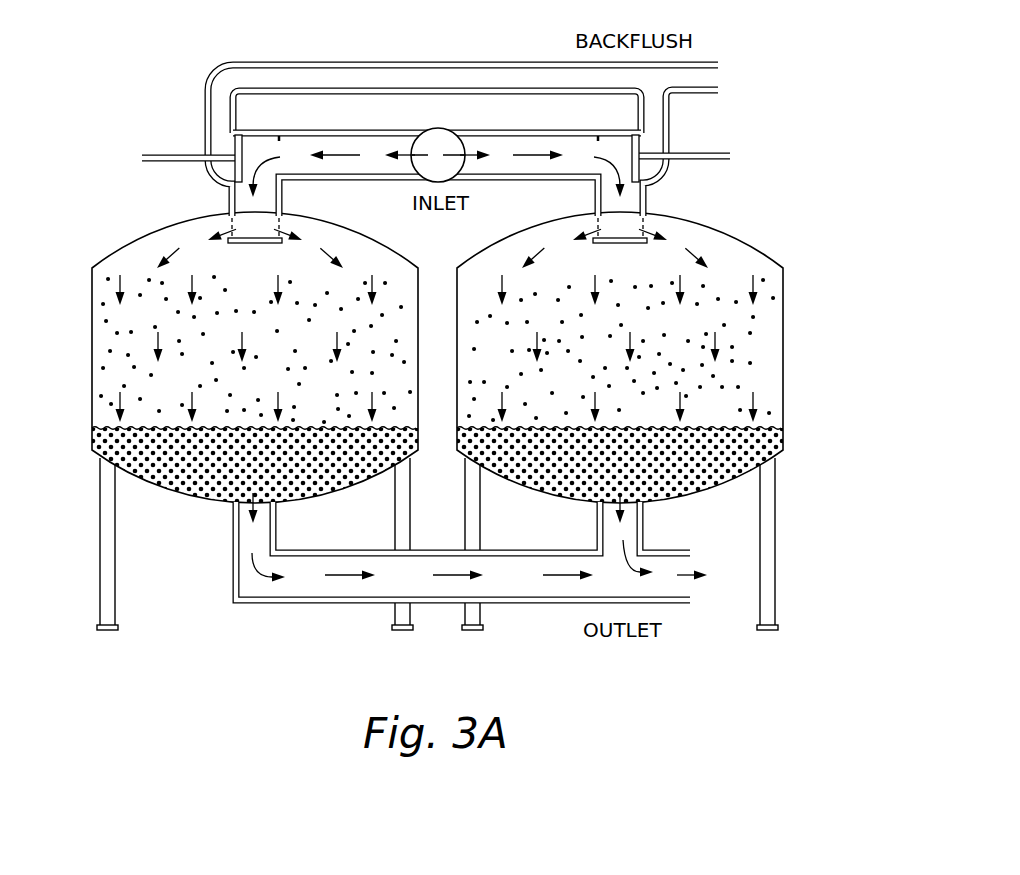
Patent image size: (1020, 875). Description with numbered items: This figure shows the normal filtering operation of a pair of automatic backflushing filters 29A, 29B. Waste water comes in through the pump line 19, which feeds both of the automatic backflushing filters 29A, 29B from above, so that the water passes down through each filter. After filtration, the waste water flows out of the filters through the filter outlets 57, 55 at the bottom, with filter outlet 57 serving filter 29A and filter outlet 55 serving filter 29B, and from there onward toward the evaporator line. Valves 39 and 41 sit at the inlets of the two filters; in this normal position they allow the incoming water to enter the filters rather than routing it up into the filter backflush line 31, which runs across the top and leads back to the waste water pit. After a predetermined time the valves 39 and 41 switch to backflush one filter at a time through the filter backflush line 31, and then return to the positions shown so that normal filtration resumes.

The pump line 19 is at (434, 140).
The automatic backflushing filter 29A is at (142, 237).
The automatic backflushing filter 29B is at (728, 230).
The filter backflush line 31 is at (718, 78).
The valve 39 is at (240, 160).
The valve 41 is at (632, 157).
The filter outlet 55 is at (630, 528).
The filter outlet 57 is at (250, 532).